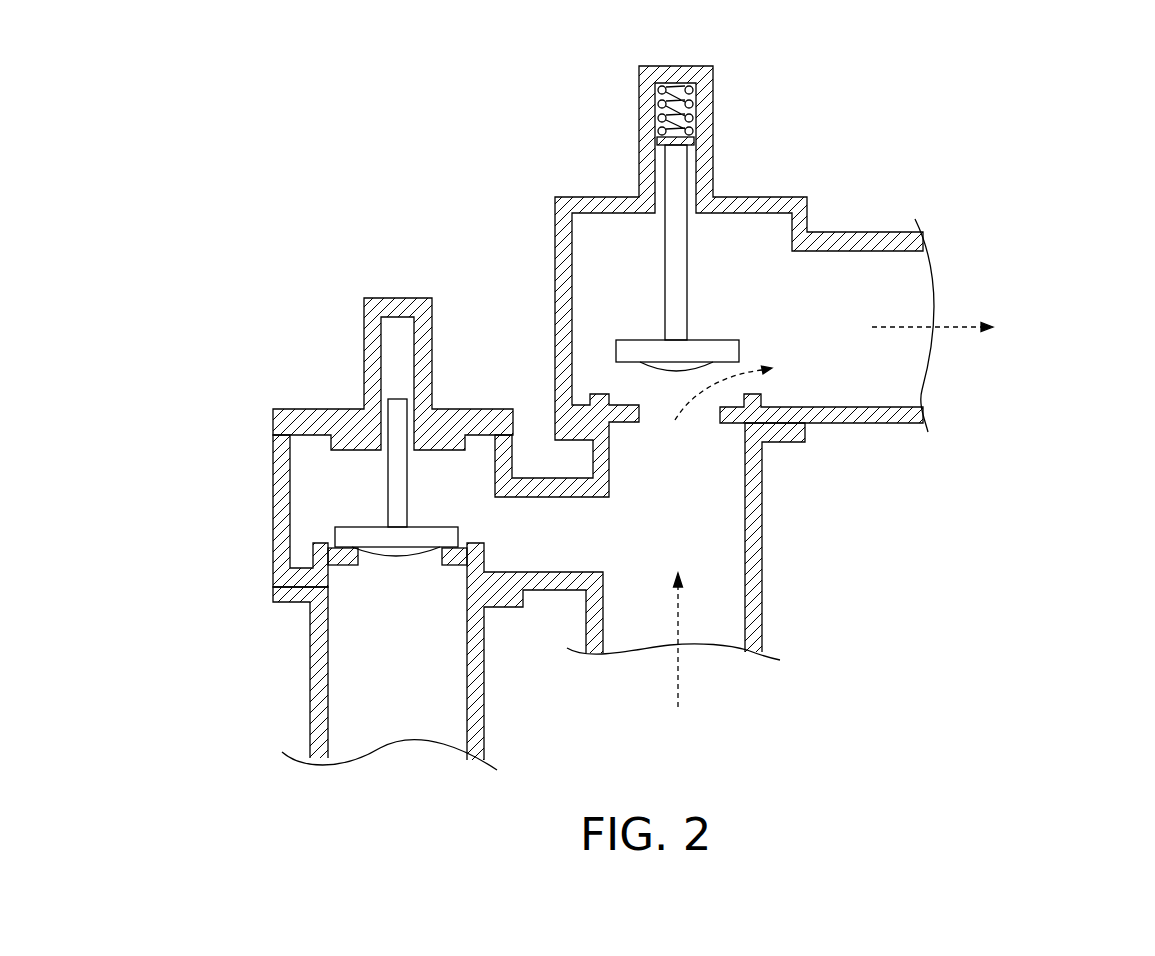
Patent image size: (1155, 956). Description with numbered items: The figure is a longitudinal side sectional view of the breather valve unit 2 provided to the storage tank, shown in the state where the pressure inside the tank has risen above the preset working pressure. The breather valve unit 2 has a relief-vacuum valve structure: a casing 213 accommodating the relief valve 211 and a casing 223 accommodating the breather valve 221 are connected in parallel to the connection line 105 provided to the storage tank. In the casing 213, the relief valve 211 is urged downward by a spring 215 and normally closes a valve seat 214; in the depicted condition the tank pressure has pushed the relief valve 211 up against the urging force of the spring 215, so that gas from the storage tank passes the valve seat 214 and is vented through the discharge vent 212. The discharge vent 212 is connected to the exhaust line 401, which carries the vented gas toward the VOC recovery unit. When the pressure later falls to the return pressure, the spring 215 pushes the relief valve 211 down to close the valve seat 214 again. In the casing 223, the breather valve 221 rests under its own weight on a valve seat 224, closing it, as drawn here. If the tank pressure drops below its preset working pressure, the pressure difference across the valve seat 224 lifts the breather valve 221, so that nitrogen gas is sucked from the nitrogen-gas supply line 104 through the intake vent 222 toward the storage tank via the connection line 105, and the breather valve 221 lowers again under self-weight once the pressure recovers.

The breather valve unit 2 is at (860, 98).
The nitrogen-gas supply line 104 is at (310, 715).
The connection line 105 is at (762, 585).
The relief valve 211 is at (617, 317).
The discharge vent 212 is at (768, 272).
The casing 213 is at (758, 197).
The valve seat 214 is at (736, 407).
The spring 215 is at (713, 97).
The breather valve 221 is at (347, 502).
The intake vent 222 is at (387, 582).
The casing 223 is at (273, 537).
The valve seat 224 is at (468, 545).
The exhaust line 401 is at (895, 424).